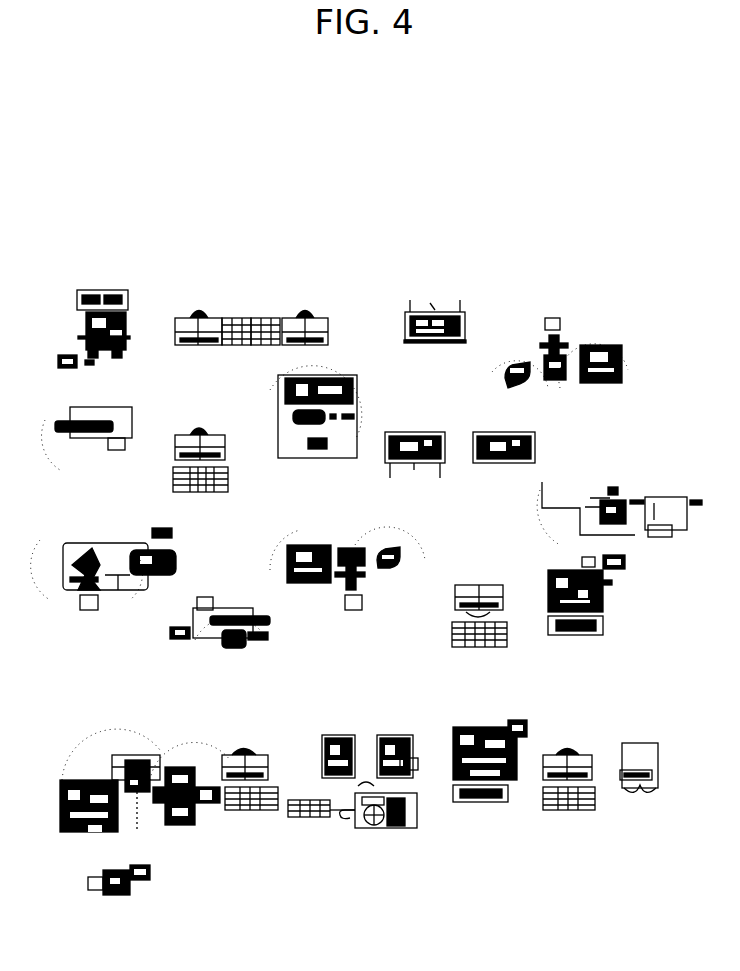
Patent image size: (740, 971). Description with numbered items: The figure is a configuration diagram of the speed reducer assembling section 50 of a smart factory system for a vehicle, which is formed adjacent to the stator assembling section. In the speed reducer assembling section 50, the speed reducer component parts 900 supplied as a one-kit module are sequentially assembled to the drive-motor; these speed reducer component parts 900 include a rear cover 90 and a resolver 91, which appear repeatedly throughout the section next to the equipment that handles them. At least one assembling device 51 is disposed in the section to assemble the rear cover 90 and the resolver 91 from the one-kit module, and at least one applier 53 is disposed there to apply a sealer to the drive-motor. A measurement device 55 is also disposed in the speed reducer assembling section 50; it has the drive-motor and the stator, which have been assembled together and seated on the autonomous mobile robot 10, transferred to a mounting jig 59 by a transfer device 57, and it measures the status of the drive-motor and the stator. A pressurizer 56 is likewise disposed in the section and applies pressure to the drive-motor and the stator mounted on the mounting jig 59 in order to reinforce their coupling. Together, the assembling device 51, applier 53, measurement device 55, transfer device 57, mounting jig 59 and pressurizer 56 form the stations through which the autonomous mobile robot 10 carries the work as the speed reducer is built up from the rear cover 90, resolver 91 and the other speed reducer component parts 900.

The speed reducer assembling section 50 is at (381, 134).
The autonomous mobile robot 10 is at (400, 830).
The assembling device 51 is at (180, 320).
The applier 53 is at (123, 292).
The measurement device 55 is at (516, 364).
The pressurizer 56 is at (63, 436).
The transfer device 57 is at (553, 318).
The mounting jig 59 is at (600, 345).
The rear cover 90 is at (230, 320).
The resolver 91 is at (270, 320).
The speed reducer component parts 900 is at (292, 852).